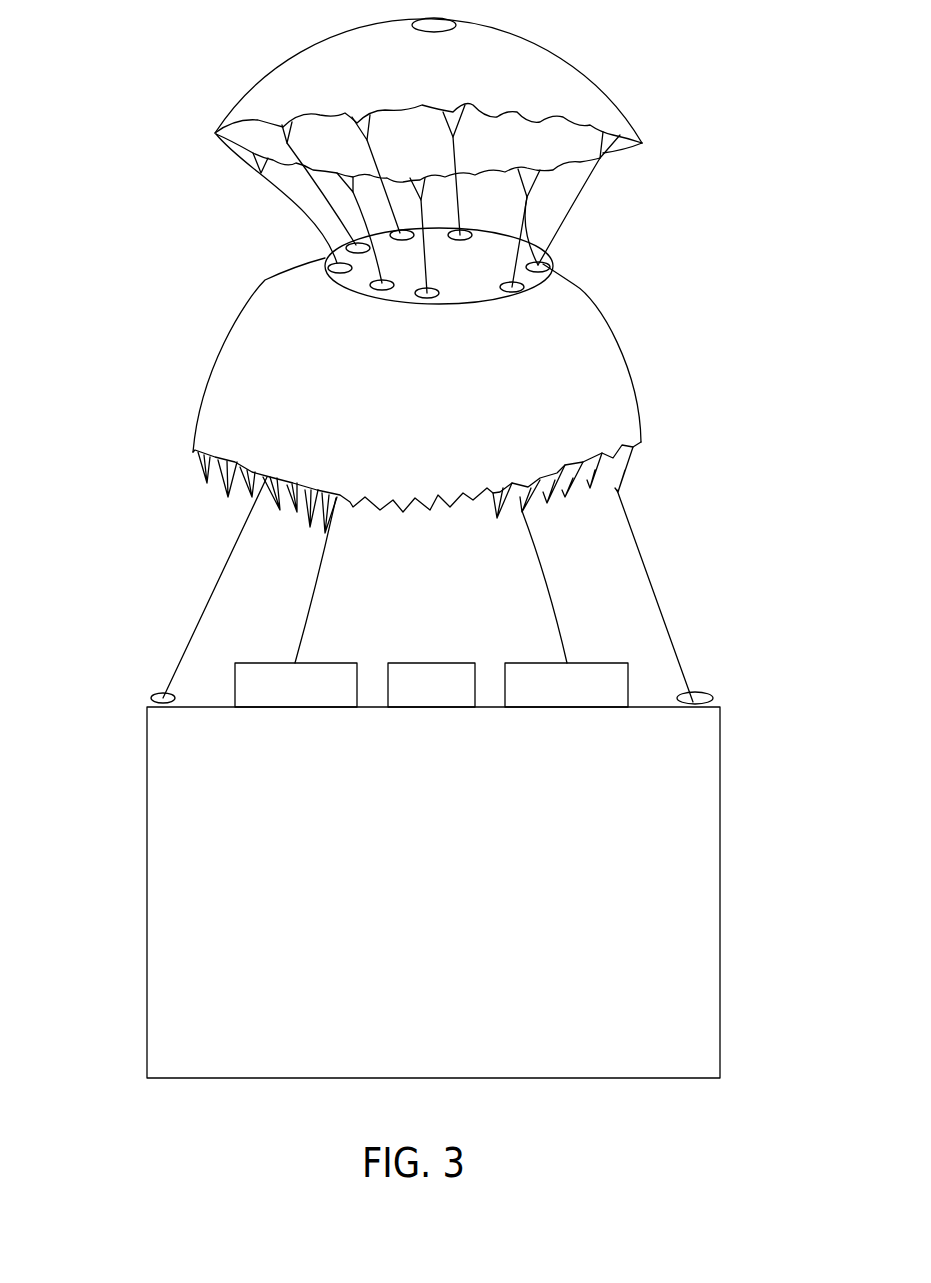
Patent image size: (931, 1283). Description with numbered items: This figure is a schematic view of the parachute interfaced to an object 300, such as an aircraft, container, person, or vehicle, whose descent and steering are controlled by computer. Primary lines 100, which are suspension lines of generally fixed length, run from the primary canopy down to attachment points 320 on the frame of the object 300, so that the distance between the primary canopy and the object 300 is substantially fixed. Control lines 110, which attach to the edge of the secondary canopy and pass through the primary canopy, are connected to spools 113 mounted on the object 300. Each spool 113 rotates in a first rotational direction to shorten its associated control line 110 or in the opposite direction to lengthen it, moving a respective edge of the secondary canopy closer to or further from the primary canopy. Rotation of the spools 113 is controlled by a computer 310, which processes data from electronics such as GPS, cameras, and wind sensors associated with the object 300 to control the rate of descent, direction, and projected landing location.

The primary lines 100 is at (195, 635).
The control lines 110 is at (313, 557).
The spools 113 is at (343, 663).
The object 300 is at (720, 862).
The computer 310 is at (428, 688).
The attachment points 320 is at (153, 697).